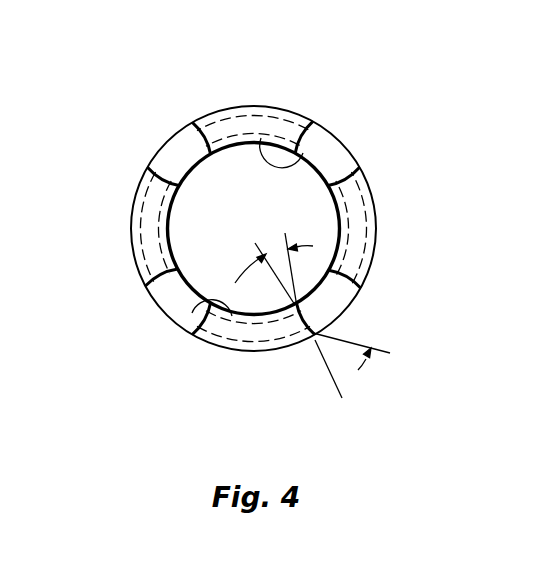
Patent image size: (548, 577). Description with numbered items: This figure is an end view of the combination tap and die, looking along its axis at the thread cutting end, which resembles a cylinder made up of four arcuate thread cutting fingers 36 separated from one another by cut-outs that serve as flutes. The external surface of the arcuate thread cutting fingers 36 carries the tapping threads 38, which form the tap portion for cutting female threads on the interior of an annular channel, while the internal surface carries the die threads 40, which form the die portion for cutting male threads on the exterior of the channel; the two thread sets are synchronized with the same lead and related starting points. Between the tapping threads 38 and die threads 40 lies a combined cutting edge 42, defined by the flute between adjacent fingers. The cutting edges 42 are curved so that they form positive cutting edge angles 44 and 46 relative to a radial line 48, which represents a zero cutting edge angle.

The arcuate thread cutting finger 36 is at (235, 101).
The tapping threads 38 is at (132, 216).
The die threads 40 is at (306, 156).
The cutting edge 42 is at (197, 135).
The positive cutting edge angle 44 is at (358, 370).
The positive cutting edge angle 46 is at (305, 248).
The radial line 48 is at (333, 377).